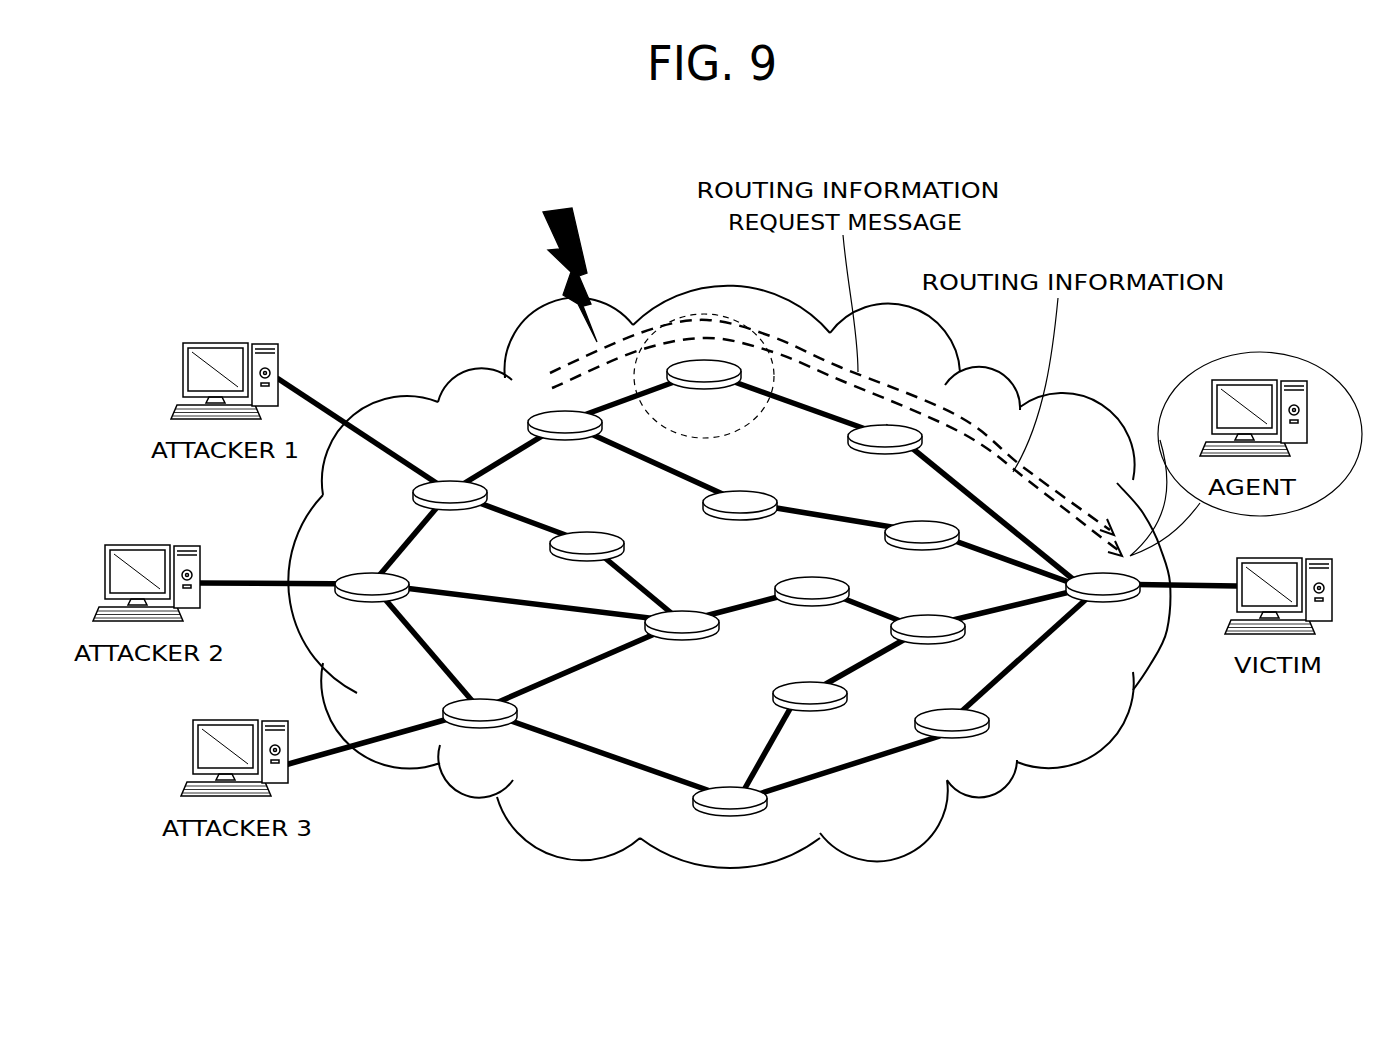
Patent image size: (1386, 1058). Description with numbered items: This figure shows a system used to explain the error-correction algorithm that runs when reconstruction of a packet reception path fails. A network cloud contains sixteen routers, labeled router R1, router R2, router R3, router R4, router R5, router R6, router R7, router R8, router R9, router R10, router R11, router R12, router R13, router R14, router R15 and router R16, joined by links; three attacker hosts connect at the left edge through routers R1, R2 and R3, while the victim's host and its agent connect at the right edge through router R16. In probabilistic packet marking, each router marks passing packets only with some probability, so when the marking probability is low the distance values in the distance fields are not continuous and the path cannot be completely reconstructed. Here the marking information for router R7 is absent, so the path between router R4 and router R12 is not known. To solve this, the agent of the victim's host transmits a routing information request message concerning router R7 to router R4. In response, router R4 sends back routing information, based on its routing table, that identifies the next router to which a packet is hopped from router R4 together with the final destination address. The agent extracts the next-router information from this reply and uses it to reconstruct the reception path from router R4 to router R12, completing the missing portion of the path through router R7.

The router R1 is at (450, 513).
The router R2 is at (372, 606).
The router R3 is at (482, 732).
The router R4 is at (565, 444).
The router R5 is at (587, 564).
The router R6 is at (730, 822).
The router R7 is at (704, 376).
The router R8 is at (740, 524).
The router R9 is at (682, 644).
The router R10 is at (820, 712).
The router R11 is at (956, 741).
The router R12 is at (885, 457).
The router R13 is at (812, 609).
The router R14 is at (924, 554).
The router R15 is at (939, 646).
The router R16 (victim edge router with agent) R16 is at (1104, 607).